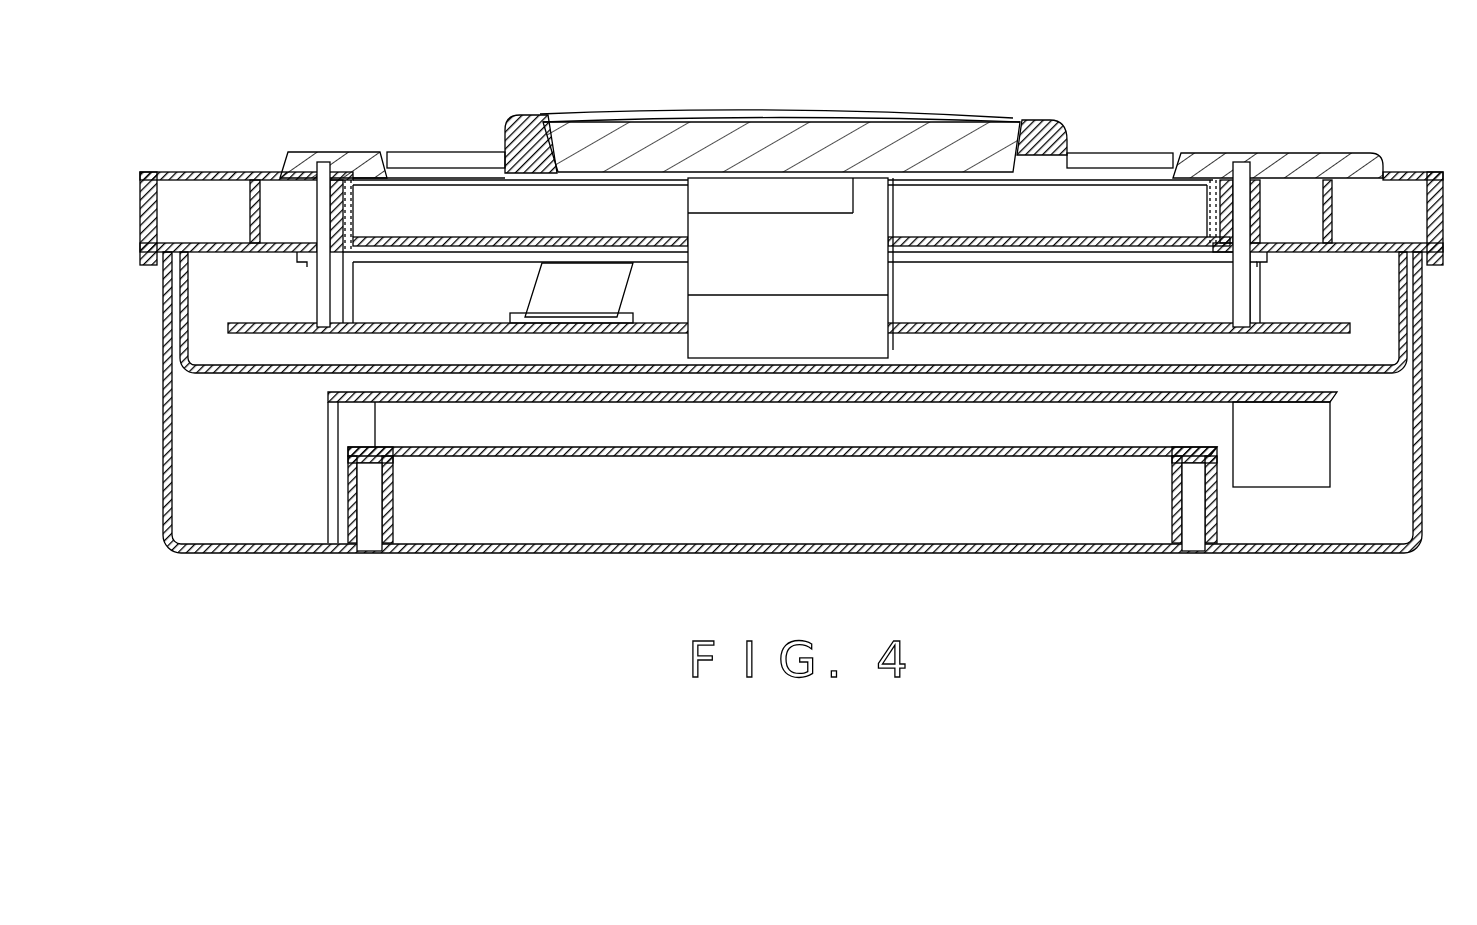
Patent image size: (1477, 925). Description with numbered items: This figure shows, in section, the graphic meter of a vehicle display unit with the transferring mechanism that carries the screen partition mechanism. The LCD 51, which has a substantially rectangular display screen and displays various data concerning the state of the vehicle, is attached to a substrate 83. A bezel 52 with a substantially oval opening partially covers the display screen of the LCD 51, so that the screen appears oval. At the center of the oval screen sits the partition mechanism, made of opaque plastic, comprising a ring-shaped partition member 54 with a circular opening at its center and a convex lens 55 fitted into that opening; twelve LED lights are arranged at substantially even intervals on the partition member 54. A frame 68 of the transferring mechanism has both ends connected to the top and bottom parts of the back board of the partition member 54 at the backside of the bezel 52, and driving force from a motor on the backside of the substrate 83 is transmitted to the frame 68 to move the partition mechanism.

The LCD 51 is at (1142, 200).
The bezel 52 is at (300, 150).
The ring-shaped partition member 54 is at (993, 118).
The lens 55 is at (853, 118).
The frame 68 is at (893, 302).
The substrate 83 is at (1172, 255).